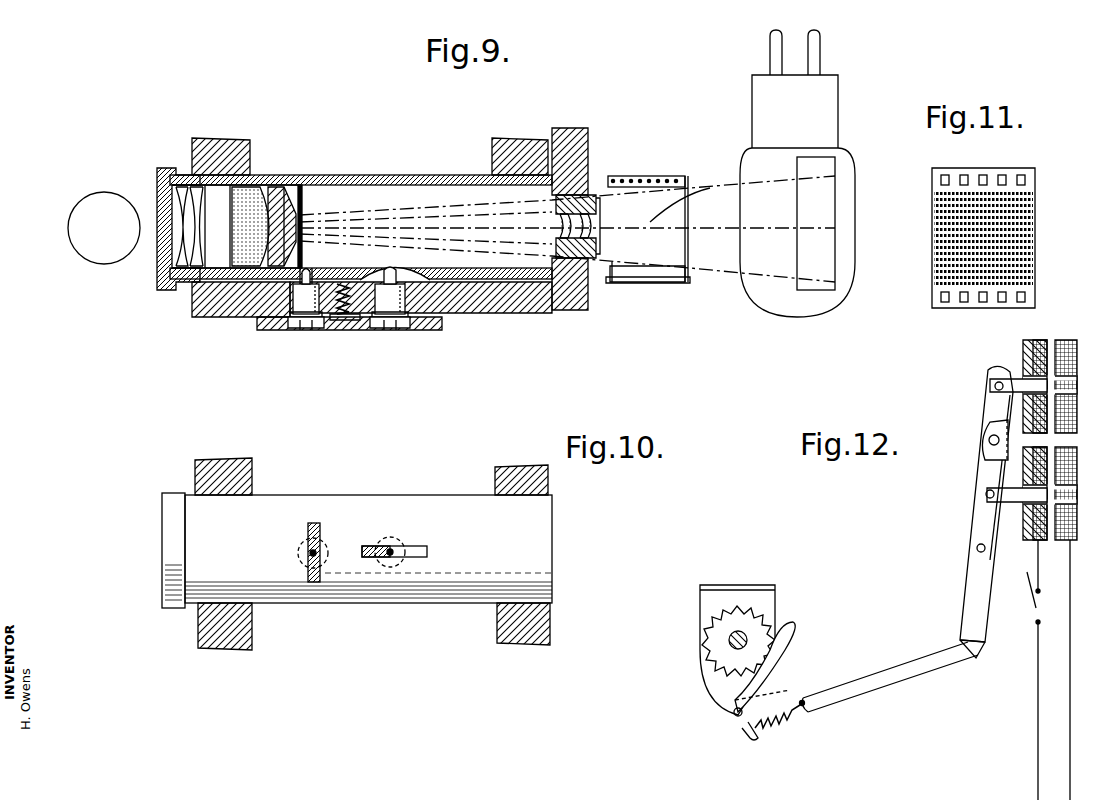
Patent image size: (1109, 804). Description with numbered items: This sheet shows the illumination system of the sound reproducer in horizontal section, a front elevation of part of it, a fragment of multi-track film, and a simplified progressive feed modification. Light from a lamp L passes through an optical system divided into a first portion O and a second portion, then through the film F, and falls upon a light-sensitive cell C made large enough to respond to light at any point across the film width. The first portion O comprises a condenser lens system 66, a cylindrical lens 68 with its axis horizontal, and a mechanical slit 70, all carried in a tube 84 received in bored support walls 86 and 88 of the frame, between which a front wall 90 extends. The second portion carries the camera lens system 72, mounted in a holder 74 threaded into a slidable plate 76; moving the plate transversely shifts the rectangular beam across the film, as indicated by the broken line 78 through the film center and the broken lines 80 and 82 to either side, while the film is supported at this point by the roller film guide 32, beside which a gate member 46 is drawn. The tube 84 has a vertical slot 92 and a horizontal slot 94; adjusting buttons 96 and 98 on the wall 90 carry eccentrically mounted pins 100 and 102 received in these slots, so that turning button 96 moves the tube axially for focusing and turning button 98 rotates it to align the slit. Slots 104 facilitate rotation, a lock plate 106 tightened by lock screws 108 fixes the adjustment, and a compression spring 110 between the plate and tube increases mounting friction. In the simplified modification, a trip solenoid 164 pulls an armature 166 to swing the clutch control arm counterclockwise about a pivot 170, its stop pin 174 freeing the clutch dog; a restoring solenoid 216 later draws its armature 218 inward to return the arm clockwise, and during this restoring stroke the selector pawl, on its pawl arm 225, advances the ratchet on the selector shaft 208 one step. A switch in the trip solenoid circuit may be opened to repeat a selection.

In FIG. 9, the roller film guide 32 is at (652, 268).
In FIG. 9, the film gate aperture plate 46 is at (652, 175).
In FIG. 9, the condenser lens system 66 is at (194, 212).
In FIG. 9, the cylindrical lens 68 is at (250, 175).
In FIG. 9, the mechanical slit 70 is at (298, 218).
In FIG. 9, the camera lens system 72 is at (588, 185).
In FIG. 9, the holder 74 is at (598, 208).
In FIG. 9, the slidable plate 76 is at (588, 140).
In FIG. 9, the broken line 78 is at (668, 222).
In FIG. 9, the broken line 80 is at (630, 262).
In FIG. 9, the broken line 82 is at (697, 183).
In FIG. 9, the tube 84 is at (392, 175).
In FIG. 10, the tube 84 is at (272, 510).
In FIG. 9, the support wall 86 is at (215, 148).
In FIG. 10, the support wall 86 is at (238, 460).
In FIG. 9, the support wall 88 is at (512, 138).
In FIG. 10, the support wall 88 is at (500, 465).
In FIG. 9, the front wall 90 is at (490, 305).
In FIG. 9, the vertical slot 92 is at (310, 270).
In FIG. 10, the vertical slot 92 is at (318, 528).
In FIG. 9, the horizontal slot 94 is at (412, 270).
In FIG. 10, the horizontal slot 94 is at (414, 547).
In FIG. 9, the adjusting button 96 is at (306, 300).
In FIG. 10, the adjusting button 96 is at (297, 551).
In FIG. 9, the adjusting button 98 is at (385, 300).
In FIG. 10, the adjusting button 98 is at (392, 540).
In FIG. 9, the eccentrically mounted pin 100 is at (312, 282).
In FIG. 10, the eccentrically mounted pin 100 is at (318, 550).
In FIG. 9, the eccentrically mounted pin 102 is at (390, 270).
In FIG. 10, the eccentrically mounted pin 102 is at (382, 558).
In FIG. 9, the slots 104 is at (306, 325).
In FIG. 9, the lock plate 106 is at (346, 322).
In FIG. 9, the lock screws 108 is at (268, 322).
In FIG. 9, the compression spring 110 is at (342, 315).
In FIG. 12, the trip solenoid 164 is at (1062, 540).
In FIG. 12, the armature 166 is at (1005, 510).
In FIG. 12, the pivot 170 is at (990, 432).
In FIG. 12, the stop pin 174 is at (978, 552).
In FIG. 12, the selector shaft 208 is at (733, 633).
In FIG. 12, the restoring solenoid 216 is at (1036, 352).
In FIG. 12, the armature 218 is at (1020, 372).
In FIG. 12, the pawl arm 225 is at (706, 688).
In FIG. 9, the lamp L is at (97, 258).
In FIG. 9, the first optical system portion O is at (358, 175).
In FIG. 9, the film F is at (690, 240).
In FIG. 11, the film F is at (930, 280).
In FIG. 9, the light-sensitive cell C is at (845, 250).